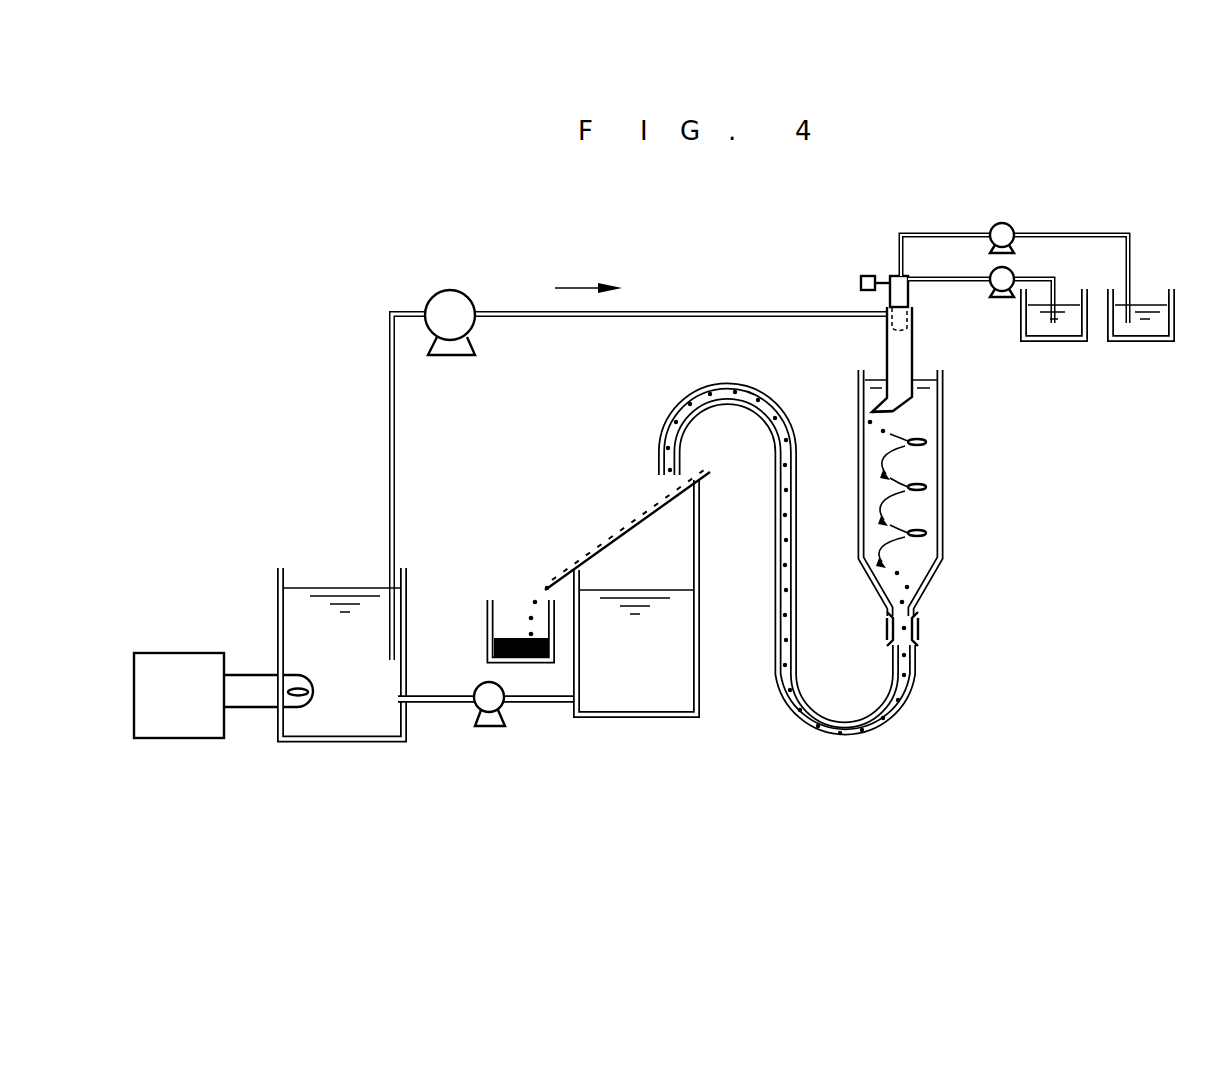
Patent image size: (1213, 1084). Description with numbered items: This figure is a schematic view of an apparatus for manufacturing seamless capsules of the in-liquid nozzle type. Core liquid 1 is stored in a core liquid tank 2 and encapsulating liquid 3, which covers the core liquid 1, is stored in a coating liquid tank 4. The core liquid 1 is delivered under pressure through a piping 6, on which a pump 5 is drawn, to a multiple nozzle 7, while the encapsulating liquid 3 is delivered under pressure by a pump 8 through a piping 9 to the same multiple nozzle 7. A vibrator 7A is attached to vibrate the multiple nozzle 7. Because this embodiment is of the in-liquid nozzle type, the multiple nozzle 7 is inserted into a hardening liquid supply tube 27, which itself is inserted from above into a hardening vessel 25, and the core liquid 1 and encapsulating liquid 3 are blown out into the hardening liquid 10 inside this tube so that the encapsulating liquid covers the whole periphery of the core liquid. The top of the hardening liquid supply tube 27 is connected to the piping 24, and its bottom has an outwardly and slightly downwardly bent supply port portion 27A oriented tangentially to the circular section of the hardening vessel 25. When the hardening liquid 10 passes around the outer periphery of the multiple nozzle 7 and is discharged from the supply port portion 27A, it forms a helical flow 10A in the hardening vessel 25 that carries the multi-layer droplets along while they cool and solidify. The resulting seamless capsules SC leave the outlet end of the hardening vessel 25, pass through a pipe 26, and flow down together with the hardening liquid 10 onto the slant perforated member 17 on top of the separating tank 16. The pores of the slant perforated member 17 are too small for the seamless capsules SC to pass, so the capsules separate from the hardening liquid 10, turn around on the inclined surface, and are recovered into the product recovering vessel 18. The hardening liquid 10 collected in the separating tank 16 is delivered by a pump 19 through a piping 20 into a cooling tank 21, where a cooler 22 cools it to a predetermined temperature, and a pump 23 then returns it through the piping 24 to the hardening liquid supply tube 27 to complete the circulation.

The core liquid 1 is at (1157, 313).
The core liquid tank 2 is at (1133, 341).
The encapsulating liquid 3 is at (1070, 317).
The coating liquid tank 4 is at (1043, 341).
The pump 5 is at (1002, 223).
The piping 6 is at (1088, 233).
The multiple nozzle 7 is at (890, 276).
The vibrator 7A is at (861, 278).
The pump 8 is at (1013, 277).
The piping 9 is at (965, 283).
The hardening liquid 10 is at (352, 712).
The helical flow 10A is at (927, 487).
The separating tank 16 is at (697, 717).
The slant perforated member 17 is at (598, 555).
The product recovering vessel 18 is at (487, 615).
The pump 19 is at (490, 728).
The piping 20 is at (550, 705).
The cooling tank 21 is at (401, 745).
The cooler 22 is at (205, 655).
The pump 23 is at (455, 298).
The piping 24 is at (700, 312).
The hardening vessel 25 is at (943, 505).
The pipe 26 is at (903, 712).
The hardening liquid supply tube 27 is at (887, 355).
The supply port portion 27A is at (877, 410).
The seamless capsules SC is at (527, 627).